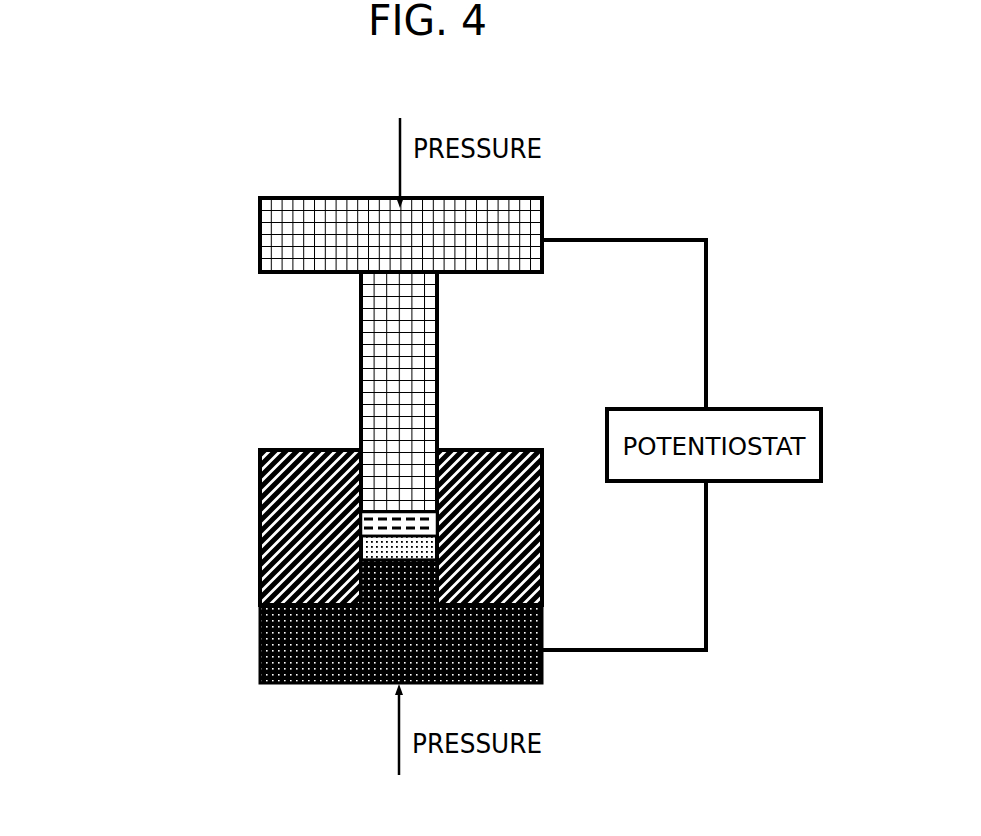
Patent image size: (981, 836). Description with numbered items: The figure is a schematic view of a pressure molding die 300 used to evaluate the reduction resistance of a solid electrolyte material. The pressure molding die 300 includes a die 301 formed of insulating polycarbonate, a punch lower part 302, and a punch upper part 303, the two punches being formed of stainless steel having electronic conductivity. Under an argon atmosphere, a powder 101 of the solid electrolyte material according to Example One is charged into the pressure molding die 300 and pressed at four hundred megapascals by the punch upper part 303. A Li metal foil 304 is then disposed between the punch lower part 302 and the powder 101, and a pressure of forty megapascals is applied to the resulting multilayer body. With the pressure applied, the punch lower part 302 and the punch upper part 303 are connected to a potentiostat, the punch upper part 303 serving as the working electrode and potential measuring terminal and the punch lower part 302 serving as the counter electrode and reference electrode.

The pressure molding die 300 is at (143, 208).
The punch upper part 303 is at (300, 251).
The die 301 is at (300, 512).
The punch lower part 302 is at (260, 648).
The powder of the solid electrolyte material 101 is at (437, 524).
The Li metal foil 304 is at (437, 558).